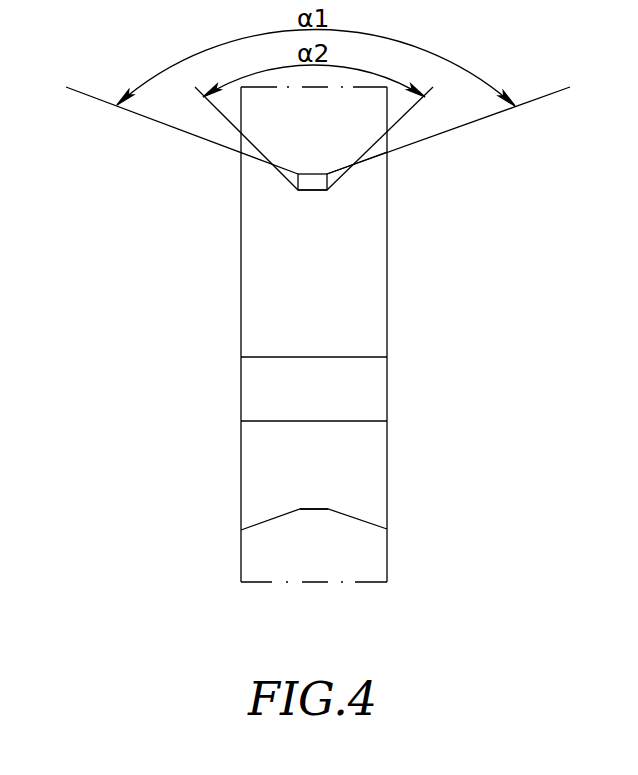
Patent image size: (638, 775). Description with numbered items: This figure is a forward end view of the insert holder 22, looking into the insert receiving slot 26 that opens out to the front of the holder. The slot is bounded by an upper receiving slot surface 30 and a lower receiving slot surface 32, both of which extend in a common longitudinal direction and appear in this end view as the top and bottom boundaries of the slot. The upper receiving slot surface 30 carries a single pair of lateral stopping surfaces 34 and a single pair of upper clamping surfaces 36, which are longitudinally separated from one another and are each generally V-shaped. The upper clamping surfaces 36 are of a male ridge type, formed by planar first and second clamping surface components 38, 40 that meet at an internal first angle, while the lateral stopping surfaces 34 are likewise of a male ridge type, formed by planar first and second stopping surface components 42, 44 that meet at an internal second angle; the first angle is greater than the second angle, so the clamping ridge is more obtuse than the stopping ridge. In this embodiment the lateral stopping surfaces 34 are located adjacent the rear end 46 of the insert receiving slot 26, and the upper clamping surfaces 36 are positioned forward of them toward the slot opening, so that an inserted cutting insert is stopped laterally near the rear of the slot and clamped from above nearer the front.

The insert holder 22 is at (205, 497).
The insert receiving slot 26 is at (298, 329).
The upper receiving slot surface 30 is at (297, 205).
The lower receiving slot surface 32 is at (313, 487).
The lateral stopping surfaces 34 is at (330, 192).
The upper clamping surfaces 36 is at (378, 155).
The first clamping surface component 38 is at (250, 157).
The second clamping surface component 40 is at (382, 161).
The first stopping surface component 42 is at (285, 178).
The second stopping surface component 44 is at (345, 172).
The rear end 46 is at (320, 397).